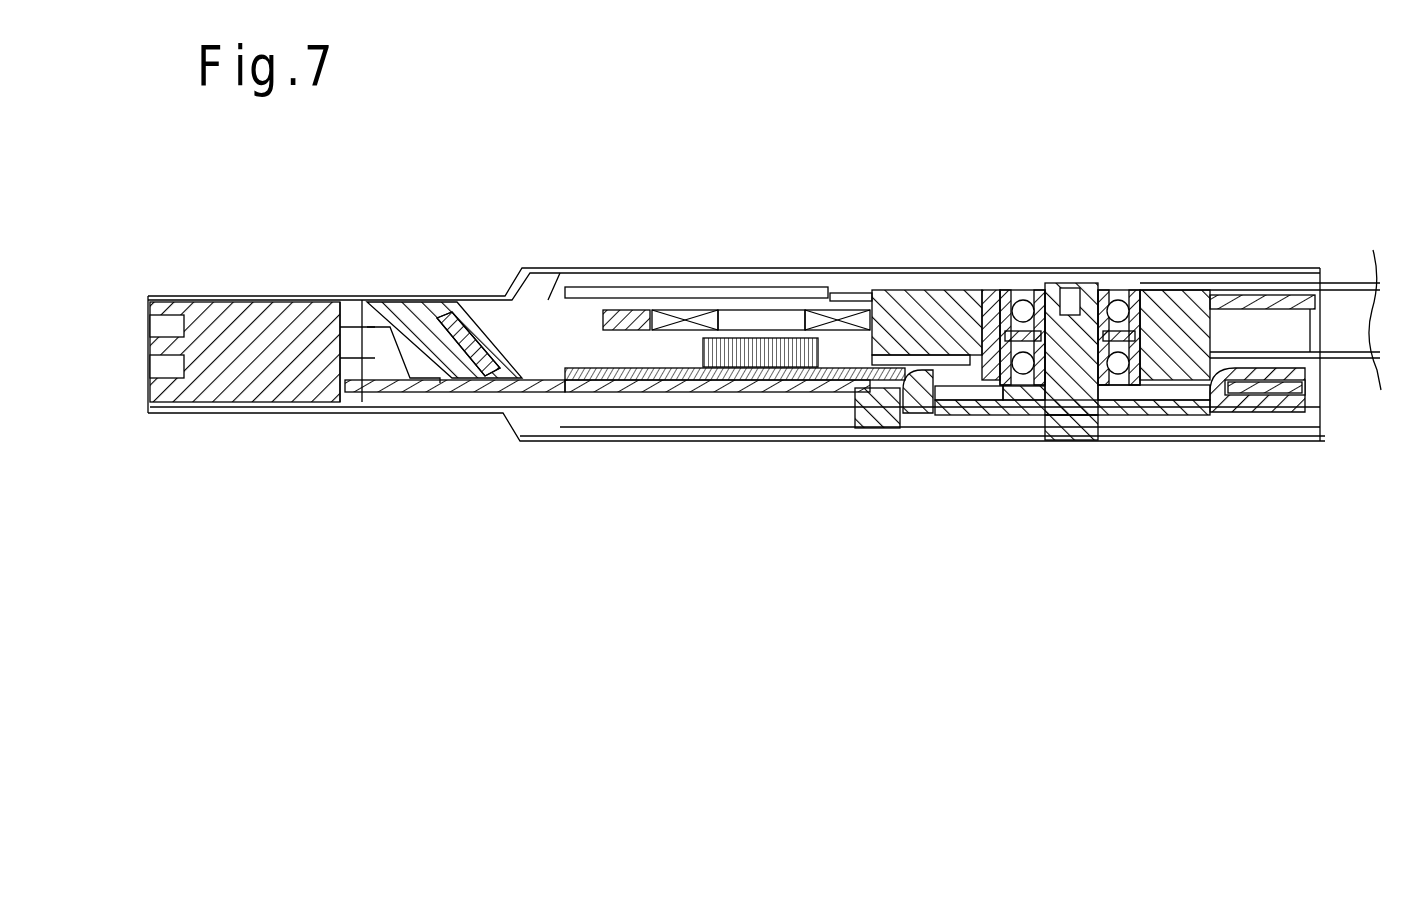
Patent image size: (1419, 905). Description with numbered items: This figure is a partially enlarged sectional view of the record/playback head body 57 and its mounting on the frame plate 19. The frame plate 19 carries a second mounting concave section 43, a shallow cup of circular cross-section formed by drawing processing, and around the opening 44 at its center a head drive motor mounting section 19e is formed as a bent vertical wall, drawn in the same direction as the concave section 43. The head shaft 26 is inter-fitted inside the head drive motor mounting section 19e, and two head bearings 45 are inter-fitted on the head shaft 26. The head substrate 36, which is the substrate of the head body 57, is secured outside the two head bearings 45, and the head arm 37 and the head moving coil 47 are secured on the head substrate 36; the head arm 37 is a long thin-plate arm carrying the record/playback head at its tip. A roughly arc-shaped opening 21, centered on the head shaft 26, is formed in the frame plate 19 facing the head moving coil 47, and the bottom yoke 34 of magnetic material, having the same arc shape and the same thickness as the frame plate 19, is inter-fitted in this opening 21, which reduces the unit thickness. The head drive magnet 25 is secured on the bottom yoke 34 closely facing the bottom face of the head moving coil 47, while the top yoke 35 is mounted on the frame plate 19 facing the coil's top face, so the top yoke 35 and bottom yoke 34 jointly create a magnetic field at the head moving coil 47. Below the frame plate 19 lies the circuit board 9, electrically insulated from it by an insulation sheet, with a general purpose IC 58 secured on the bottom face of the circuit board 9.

The circuit board 9 is at (458, 392).
The frame plate 19 is at (1283, 440).
The head drive motor mounting section 19e is at (1103, 440).
The opening (notched window section) 21 is at (572, 366).
The head drive magnet 25 is at (767, 352).
The head shaft 26 is at (1045, 442).
The bottom yoke 34 is at (603, 388).
The top yoke 35 is at (578, 290).
The head substrate 36 is at (895, 294).
The head arm 37 is at (1337, 310).
The second mounting concave section 43 is at (1197, 440).
The opening 44 is at (1072, 440).
The head bearings 45 is at (990, 292).
The head moving coil 47 is at (703, 300).
The record/playback head body 57 is at (924, 222).
The general purpose IC 58 is at (872, 428).